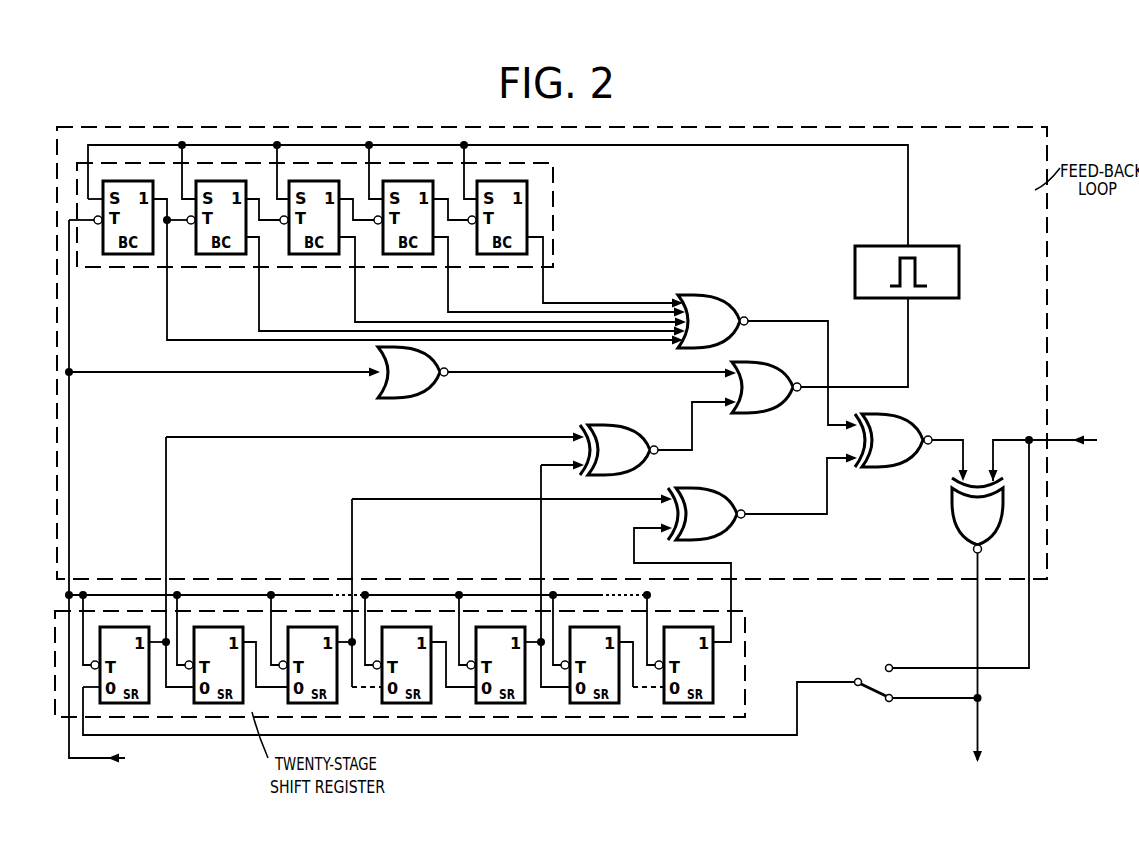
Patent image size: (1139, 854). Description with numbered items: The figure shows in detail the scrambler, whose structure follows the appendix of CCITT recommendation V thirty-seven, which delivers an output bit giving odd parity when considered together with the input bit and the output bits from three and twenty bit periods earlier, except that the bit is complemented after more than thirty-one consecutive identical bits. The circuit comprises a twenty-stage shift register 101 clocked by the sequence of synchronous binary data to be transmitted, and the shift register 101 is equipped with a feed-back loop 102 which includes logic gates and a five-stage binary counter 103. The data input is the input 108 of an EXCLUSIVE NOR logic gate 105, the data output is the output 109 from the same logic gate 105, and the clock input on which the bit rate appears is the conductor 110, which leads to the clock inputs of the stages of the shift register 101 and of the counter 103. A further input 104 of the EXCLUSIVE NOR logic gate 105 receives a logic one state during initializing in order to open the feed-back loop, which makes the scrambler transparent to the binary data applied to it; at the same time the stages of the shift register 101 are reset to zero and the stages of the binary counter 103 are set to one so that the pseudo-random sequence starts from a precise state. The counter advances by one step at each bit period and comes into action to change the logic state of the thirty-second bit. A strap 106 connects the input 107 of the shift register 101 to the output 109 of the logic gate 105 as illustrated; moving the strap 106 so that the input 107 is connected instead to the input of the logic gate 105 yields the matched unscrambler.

The twenty-stage shift register 101 is at (745, 663).
The feed-back loop 102 is at (1049, 272).
The five-stage binary counter 103 is at (553, 222).
The input of the EXCLUSIVE NOR logic gate 104 is at (953, 434).
The EXCLUSIVE NOR logic gate 105 is at (950, 519).
The strap 106 is at (872, 678).
The input of shift register 107 is at (818, 683).
The data input 108 is at (1022, 437).
The data output 109 is at (980, 718).
The clock input conductor 110 is at (128, 758).